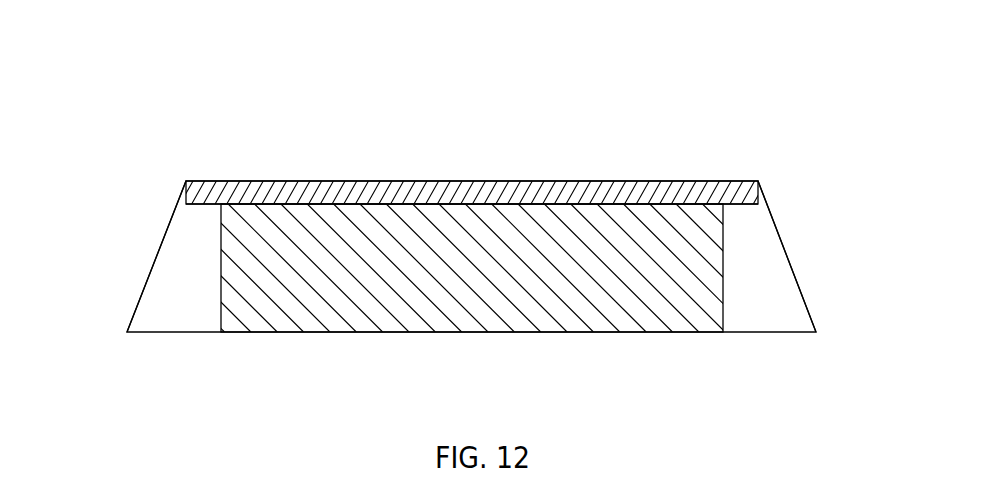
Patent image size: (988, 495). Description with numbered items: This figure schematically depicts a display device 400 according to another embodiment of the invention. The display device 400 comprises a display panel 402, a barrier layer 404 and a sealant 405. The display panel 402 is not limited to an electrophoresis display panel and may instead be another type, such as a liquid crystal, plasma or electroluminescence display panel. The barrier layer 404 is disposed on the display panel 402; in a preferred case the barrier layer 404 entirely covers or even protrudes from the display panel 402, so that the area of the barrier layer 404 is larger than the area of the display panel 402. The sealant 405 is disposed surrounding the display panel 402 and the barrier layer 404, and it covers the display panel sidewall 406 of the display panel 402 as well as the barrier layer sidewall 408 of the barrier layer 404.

The display device 400 is at (771, 145).
The display panel 402 is at (675, 250).
The barrier layer 404 is at (758, 186).
The sealant 405 is at (203, 245).
The display panel sidewall 406 is at (723, 298).
The barrier layer sidewall 408 is at (760, 202).